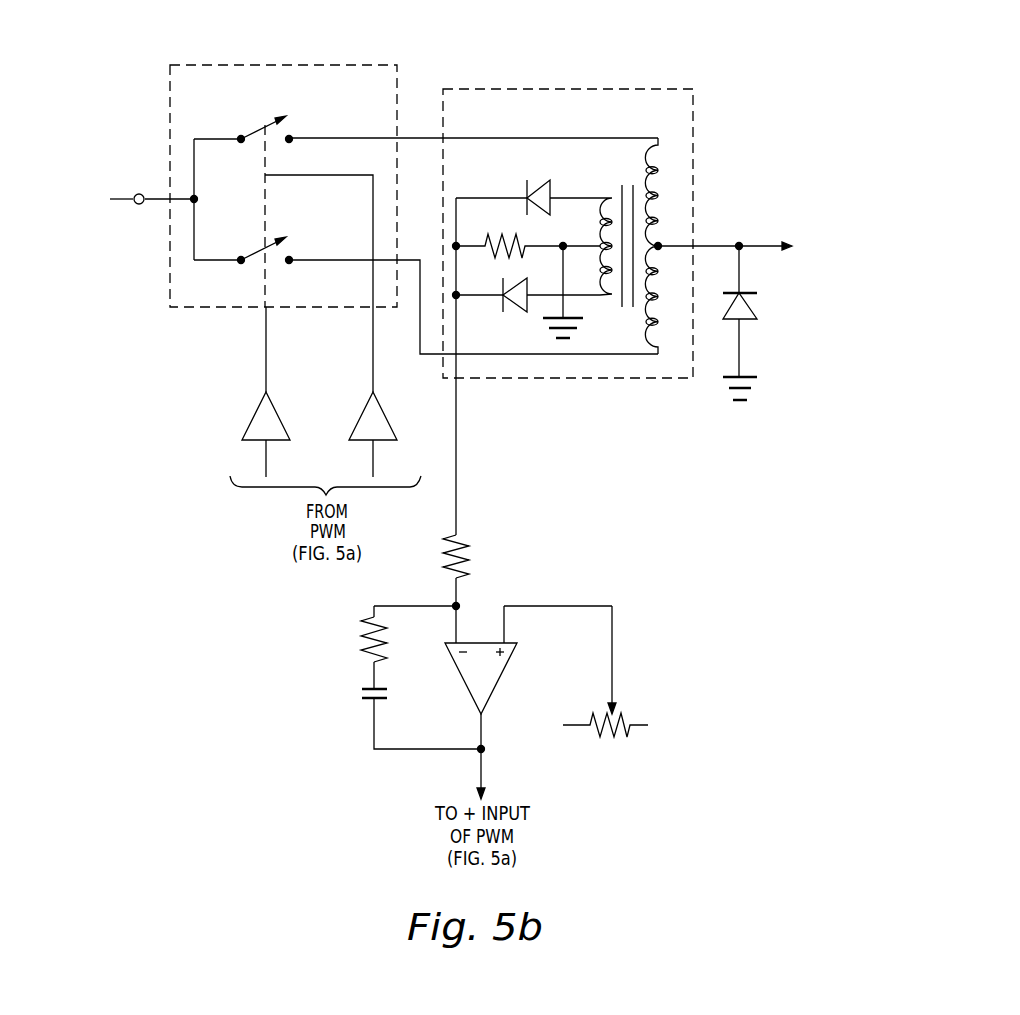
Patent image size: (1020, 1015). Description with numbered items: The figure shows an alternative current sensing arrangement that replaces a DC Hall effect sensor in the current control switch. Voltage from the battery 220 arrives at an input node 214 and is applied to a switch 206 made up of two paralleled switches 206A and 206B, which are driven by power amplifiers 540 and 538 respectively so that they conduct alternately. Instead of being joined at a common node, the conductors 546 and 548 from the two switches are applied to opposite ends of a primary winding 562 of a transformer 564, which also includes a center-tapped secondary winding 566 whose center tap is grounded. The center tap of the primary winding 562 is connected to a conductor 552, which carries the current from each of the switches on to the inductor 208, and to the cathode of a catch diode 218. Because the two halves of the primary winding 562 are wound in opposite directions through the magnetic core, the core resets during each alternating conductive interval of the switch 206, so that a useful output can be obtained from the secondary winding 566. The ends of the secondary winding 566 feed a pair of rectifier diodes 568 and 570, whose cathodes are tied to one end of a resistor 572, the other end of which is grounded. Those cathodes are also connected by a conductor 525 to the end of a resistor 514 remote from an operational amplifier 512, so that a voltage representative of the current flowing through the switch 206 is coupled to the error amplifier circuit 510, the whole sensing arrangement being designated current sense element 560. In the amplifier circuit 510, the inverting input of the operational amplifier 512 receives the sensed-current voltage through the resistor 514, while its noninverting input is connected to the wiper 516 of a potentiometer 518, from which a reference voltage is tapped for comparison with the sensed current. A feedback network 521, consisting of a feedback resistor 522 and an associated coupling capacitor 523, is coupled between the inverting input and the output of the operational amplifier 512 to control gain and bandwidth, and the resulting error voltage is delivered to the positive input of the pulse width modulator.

The switch 206 is at (283, 186).
The switch 206A is at (251, 131).
The switch 206B is at (263, 251).
The inductor 208 is at (815, 268).
The input node 214 is at (139, 193).
The catch diode 218 is at (750, 318).
The battery 220 is at (129, 238).
The amplifier circuit 510 is at (448, 702).
The operational amplifier 512 is at (490, 695).
The resistor 514 is at (470, 556).
The wiper 516 is at (612, 688).
The potentiometer 518 is at (630, 773).
The feedback network 521 is at (346, 702).
The feedback resistor 522 is at (364, 622).
The coupling capacitor 523 is at (378, 705).
The conductor 525 is at (458, 455).
The power amplifier 538 is at (366, 412).
The power amplifier 540 is at (256, 412).
The conductor 546 is at (358, 137).
The conductor 548 is at (336, 258).
The conductor 552 is at (757, 242).
The current sense element 560 is at (653, 88).
The primary winding 562 is at (663, 197).
The transformer 564 is at (648, 125).
The secondary winding 566 is at (600, 222).
The rectifier diode 568 is at (526, 190).
The rectifier diode 570 is at (522, 308).
The resistor 572 is at (512, 237).